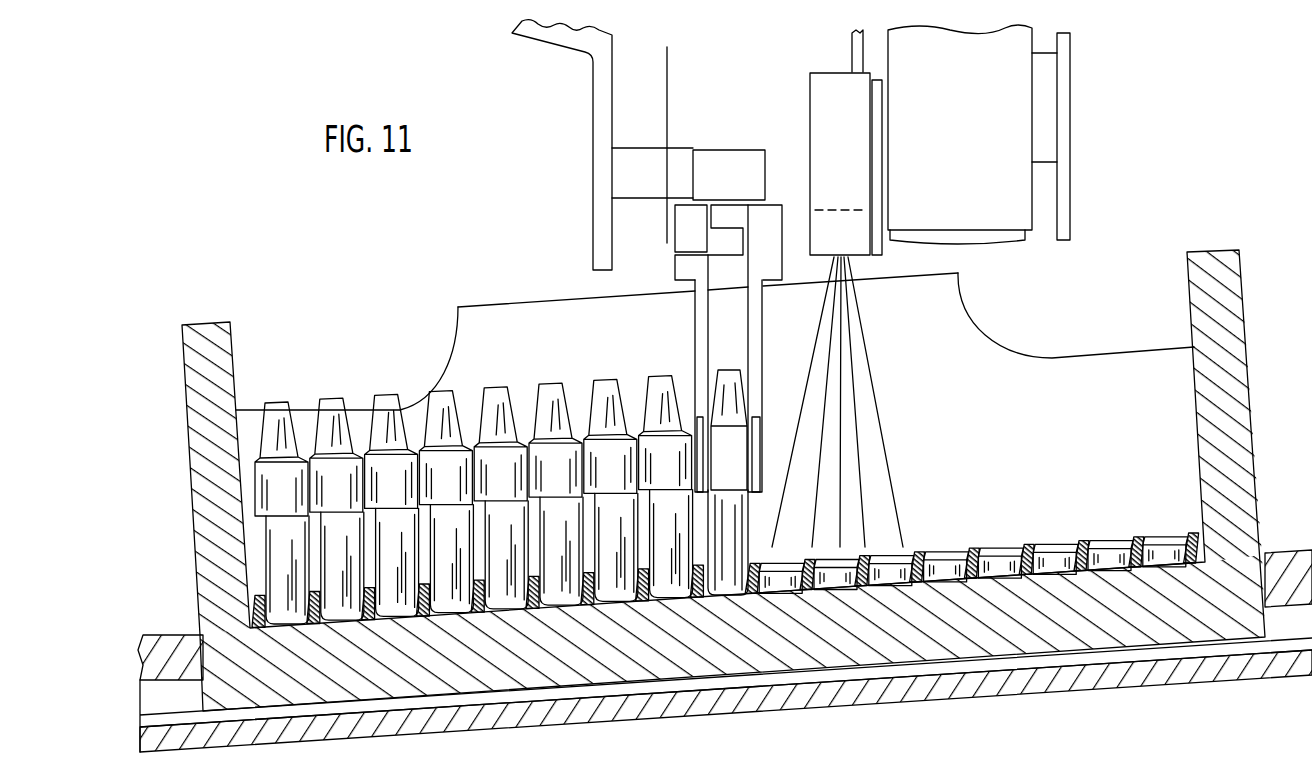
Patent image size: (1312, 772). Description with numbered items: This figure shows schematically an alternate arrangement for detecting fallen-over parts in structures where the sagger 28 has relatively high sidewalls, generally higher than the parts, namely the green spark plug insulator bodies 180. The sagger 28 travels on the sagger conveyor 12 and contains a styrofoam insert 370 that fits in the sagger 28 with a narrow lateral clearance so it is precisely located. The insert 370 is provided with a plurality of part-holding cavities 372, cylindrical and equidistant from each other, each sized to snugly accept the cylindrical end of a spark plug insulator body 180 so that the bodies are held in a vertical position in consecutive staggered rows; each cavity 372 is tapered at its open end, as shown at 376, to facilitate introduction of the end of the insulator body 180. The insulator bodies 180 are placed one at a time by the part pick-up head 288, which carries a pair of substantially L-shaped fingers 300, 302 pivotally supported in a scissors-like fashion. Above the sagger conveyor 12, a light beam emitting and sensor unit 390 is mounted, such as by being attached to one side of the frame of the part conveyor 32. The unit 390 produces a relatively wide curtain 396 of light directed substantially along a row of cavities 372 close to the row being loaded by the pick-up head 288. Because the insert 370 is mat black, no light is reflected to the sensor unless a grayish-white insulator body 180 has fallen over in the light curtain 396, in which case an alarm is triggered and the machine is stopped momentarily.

The sagger conveyor 12 is at (667, 47).
The sagger 28 is at (1261, 447).
The part conveyor 32 is at (1000, 244).
The spark plug insulator body 180 is at (551, 396).
The part pick-up head 288 is at (669, 273).
The L-shaped finger 300 is at (750, 356).
The L-shaped finger 302 is at (695, 336).
The styrofoam insert 370 is at (1199, 568).
The part-holding cavity 372 is at (927, 579).
The tapered open end 376 is at (960, 553).
The light beam emitting and sensor unit 390 is at (823, 137).
The curtain of light 396 is at (837, 421).